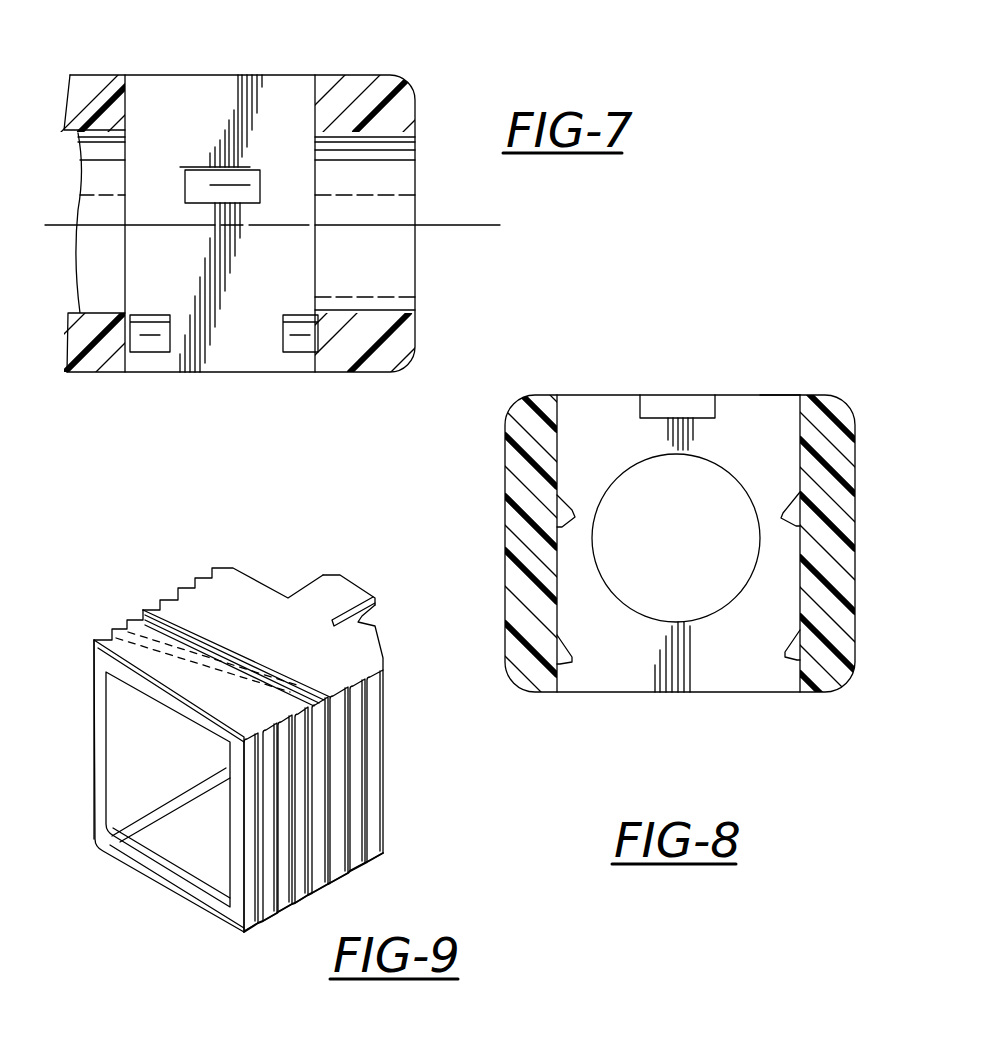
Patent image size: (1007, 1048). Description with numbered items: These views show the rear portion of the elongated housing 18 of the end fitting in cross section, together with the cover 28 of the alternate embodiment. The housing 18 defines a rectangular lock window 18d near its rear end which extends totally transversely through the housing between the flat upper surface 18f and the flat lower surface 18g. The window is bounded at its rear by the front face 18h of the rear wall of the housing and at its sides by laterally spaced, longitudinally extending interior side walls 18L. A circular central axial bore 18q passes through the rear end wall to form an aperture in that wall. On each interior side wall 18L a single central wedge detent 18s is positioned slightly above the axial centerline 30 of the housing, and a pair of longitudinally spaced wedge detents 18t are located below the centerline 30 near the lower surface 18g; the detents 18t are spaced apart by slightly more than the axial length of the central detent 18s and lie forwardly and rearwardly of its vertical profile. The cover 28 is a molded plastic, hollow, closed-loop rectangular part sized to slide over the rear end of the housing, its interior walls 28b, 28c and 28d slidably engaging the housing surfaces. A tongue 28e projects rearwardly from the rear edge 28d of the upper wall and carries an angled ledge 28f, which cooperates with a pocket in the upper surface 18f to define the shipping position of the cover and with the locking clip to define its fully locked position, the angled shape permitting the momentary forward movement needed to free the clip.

In FIG. 8, the housing 18 is at (853, 392).
In FIG. 7, the lock window 18d is at (291, 106).
In FIG. 8, the lock window 18d is at (625, 424).
In FIG. 7, the housing interior side wall 18L is at (222, 117).
In FIG. 8, the housing interior side wall 18L is at (787, 395).
In FIG. 7, the central wedge detent 18s is at (258, 196).
In FIG. 8, the central wedge detent 18s is at (572, 506).
In FIG. 7, the wedge detent 18t is at (157, 345).
In FIG. 8, the wedge detent 18t is at (572, 648).
In FIG. 7, the lower surface 18g is at (93, 374).
In FIG. 8, the front face 18h is at (757, 675).
In FIG. 8, the upper surface 18f is at (740, 395).
In FIG. 8, the central axial bore 18q is at (653, 623).
In FIG. 7, the axial centerline 30 is at (440, 224).
In FIG. 9, the cover 28 is at (137, 601).
In FIG. 9, the interior wall 28b is at (203, 852).
In FIG. 9, the interior wall 28c is at (168, 766).
In FIG. 9, the interior wall 28d is at (250, 568).
In FIG. 9, the tongue 28e is at (330, 574).
In FIG. 9, the angled ledge 28f is at (363, 629).